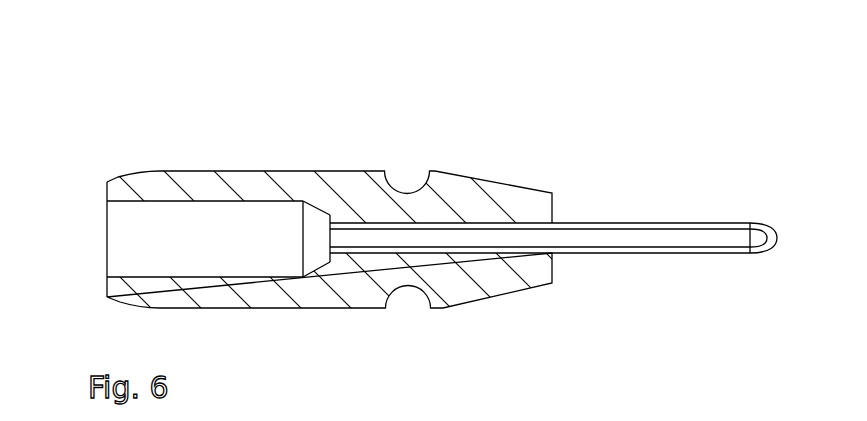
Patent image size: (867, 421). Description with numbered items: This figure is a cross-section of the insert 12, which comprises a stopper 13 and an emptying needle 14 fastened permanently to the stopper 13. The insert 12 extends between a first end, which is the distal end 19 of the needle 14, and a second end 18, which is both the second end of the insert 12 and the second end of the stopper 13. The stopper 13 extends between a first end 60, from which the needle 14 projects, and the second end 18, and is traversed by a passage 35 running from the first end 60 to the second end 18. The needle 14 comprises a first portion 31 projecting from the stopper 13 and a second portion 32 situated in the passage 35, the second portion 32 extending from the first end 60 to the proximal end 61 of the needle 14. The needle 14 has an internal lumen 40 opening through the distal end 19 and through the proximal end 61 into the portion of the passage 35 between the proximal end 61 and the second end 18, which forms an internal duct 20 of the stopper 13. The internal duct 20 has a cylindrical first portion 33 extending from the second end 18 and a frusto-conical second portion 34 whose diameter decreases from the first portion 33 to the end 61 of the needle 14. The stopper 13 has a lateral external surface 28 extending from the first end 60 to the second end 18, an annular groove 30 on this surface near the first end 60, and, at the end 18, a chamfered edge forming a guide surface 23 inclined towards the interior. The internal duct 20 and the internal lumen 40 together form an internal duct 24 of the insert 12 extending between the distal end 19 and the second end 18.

The insert 12 is at (404, 194).
The stopper 13 is at (308, 206).
The emptying needle 14 is at (567, 244).
The second end 18 is at (107, 219).
The distal end 19 is at (777, 232).
The internal duct 20 is at (218, 213).
The guide surface 23 is at (117, 303).
The internal duct 24 is at (256, 258).
The lateral external surface 28 is at (499, 312).
The annular groove 30 is at (410, 312).
The first portion 31 is at (590, 254).
The second portion 32 is at (485, 257).
The cylindrical first portion 33 is at (180, 213).
The frusto-conical second portion 34 is at (317, 217).
The passage 35 is at (467, 222).
The internal lumen 40 is at (668, 234).
The first end 60 is at (554, 212).
The proximal end 61 is at (330, 240).